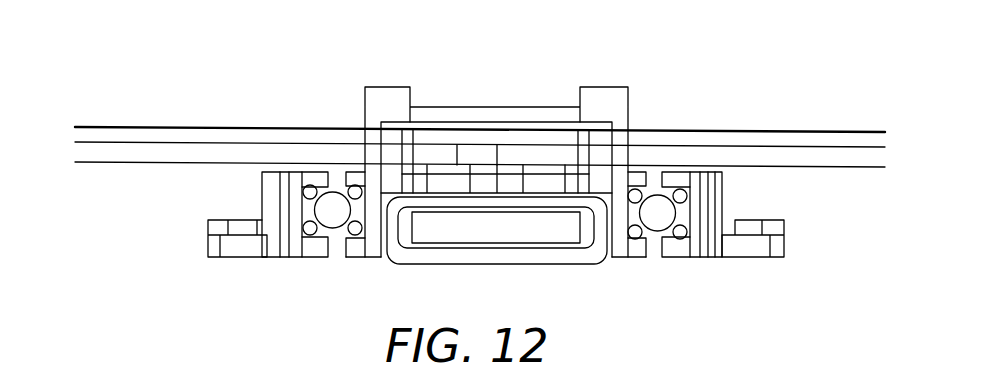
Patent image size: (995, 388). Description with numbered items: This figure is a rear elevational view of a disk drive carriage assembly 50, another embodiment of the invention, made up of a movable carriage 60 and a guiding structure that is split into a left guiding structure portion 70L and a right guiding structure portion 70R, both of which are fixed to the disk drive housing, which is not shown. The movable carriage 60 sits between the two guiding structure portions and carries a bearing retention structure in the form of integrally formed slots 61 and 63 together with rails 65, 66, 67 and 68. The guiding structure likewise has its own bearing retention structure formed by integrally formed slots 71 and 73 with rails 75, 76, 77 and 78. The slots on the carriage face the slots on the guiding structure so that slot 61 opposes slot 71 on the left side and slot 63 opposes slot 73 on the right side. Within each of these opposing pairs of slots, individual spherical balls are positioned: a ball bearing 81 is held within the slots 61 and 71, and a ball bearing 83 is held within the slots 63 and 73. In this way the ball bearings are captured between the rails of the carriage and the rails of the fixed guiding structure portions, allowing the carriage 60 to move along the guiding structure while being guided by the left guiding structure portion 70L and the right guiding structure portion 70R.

The carriage assembly 50 is at (652, 74).
The movable carriage 60 is at (391, 87).
The slot 61 is at (360, 210).
The slot 63 is at (632, 215).
The rail 65 is at (353, 190).
The rail 66 is at (355, 230).
The rail 67 is at (636, 194).
The rail 68 is at (635, 236).
The left guiding structure portion 70L is at (208, 233).
The right guiding structure portion 70R is at (785, 236).
The slot 71 is at (300, 208).
The slot 73 is at (718, 208).
The rail 75 is at (303, 188).
The rail 76 is at (305, 232).
The rail 77 is at (681, 194).
The rail 78 is at (680, 236).
The ball bearing 81 is at (332, 216).
The ball bearing 83 is at (657, 216).